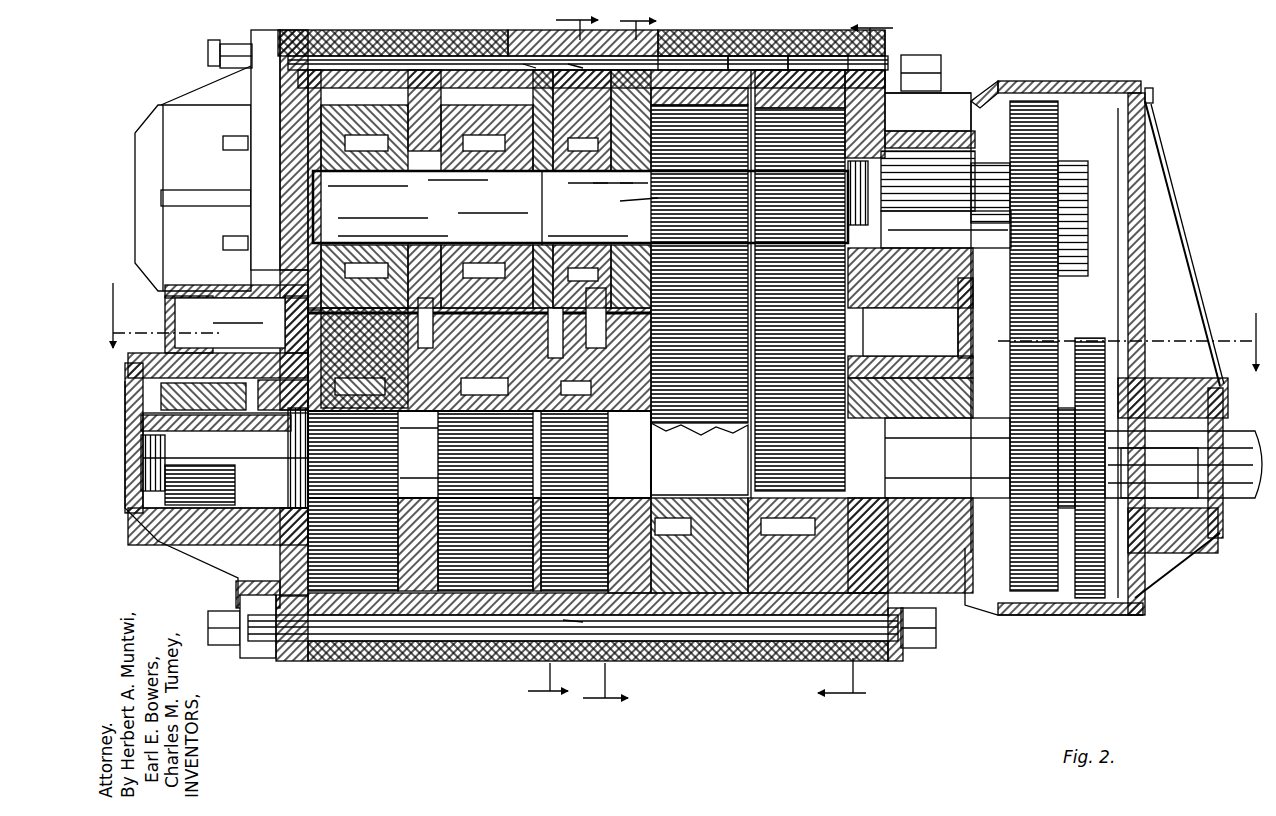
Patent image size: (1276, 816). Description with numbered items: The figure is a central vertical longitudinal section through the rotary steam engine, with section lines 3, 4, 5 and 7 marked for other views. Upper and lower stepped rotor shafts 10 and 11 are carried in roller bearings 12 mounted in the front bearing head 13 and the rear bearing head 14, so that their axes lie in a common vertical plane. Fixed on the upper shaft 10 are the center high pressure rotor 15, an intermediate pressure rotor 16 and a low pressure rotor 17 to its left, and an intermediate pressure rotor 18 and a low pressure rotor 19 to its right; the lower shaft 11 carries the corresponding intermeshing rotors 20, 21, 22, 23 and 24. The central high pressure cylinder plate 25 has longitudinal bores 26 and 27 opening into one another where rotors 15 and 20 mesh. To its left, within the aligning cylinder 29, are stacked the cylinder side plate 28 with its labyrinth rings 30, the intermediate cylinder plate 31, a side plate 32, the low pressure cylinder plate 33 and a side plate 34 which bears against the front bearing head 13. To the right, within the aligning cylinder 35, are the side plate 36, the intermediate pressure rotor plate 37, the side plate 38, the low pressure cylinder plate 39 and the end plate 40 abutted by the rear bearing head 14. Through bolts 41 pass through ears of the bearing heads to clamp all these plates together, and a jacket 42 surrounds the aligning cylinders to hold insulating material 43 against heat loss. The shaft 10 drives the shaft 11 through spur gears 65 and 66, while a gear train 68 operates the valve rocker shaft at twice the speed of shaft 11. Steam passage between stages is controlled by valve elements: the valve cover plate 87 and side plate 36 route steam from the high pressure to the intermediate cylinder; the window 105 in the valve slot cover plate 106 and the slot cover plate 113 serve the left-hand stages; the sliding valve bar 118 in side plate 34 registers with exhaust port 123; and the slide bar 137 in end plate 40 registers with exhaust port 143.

The section line 3- 3 is at (680, 316).
The section line 4- 4 is at (551, 357).
The section line 5- 5 is at (608, 362).
The section line 7- 7 is at (862, 364).
The upper rotor shaft 10 is at (305, 195).
The lower rotor shaft 11 is at (140, 440).
The roller bearings 12 is at (898, 240).
The front bearing head 13 is at (160, 112).
The rear bearing head 14 is at (950, 93).
The center high pressure rotor 15 is at (586, 188).
The intermediate pressure rotor 16 is at (470, 165).
The low pressure rotor 17 is at (364, 165).
The intermediate pressure rotor 18 is at (628, 202).
The low pressure rotor 19 is at (771, 43).
The lower high pressure rotor 20 is at (574, 501).
The lower intermediate pressure rotor 21 is at (485, 501).
The lower low pressure rotor 22 is at (361, 501).
The lower intermediate pressure rotor 23 is at (668, 428).
The lower low pressure rotor 24 is at (770, 440).
The high pressure cylinder plate 25 is at (594, 341).
The longitudinal bore 26 is at (582, 189).
The longitudinal bore 27 is at (568, 628).
The cylinder side plate 28 is at (513, 341).
The aligning cylinder 29 is at (380, 60).
The labyrinth rings 30 is at (556, 208).
The intermediate cylinder plate 31 is at (573, 360).
The side plate 32 is at (415, 60).
The low pressure cylinder plate 33 is at (345, 60).
The side plate 34 is at (305, 238).
The aligning cylinder 35 is at (655, 655).
The side plate 36 is at (628, 330).
The intermediate pressure rotor plate 37 is at (695, 62).
The side plate 38 is at (735, 75).
The low pressure cylinder plate 39 is at (765, 75).
The end plate 40 is at (884, 108).
The through bolts 41 is at (212, 47).
The jacket 42 is at (272, 22).
The insulating material 43 is at (243, 22).
The spur gear 65 is at (1052, 124).
The spur gear 66 is at (1005, 585).
The gear train 68 is at (1159, 473).
The valve cover plate 87 is at (587, 303).
The window 105 is at (463, 298).
The valve slot cover plate 106 is at (487, 351).
The slot cover plate 113 is at (364, 348).
The sliding valve bar 118 is at (272, 330).
The exhaust port 123 is at (268, 302).
The slide bar 137 is at (910, 332).
The exhaust port 143 is at (924, 318).